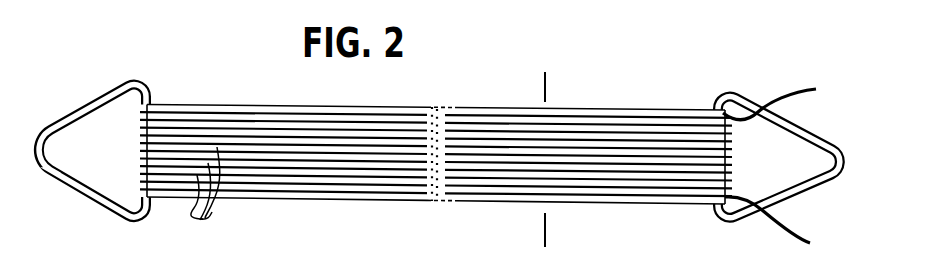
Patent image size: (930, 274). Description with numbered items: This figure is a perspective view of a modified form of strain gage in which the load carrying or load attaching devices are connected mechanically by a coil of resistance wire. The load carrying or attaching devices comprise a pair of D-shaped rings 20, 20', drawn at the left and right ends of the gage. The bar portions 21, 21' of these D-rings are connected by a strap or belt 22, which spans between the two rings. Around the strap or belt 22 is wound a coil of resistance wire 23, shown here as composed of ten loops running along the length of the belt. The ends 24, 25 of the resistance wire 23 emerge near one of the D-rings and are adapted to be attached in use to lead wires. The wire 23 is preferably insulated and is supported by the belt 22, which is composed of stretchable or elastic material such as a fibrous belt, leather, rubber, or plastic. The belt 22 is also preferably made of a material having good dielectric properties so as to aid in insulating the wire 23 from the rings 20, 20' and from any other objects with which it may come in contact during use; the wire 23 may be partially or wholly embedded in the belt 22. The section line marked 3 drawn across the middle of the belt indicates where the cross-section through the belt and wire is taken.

The D-shaped ring 20 is at (799, 156).
The D-shaped ring 20' is at (89, 168).
The bar portion 21 is at (691, 133).
The bar portion 21' is at (184, 122).
The strap or belt 22 is at (228, 103).
The coil of resistance wire 23 is at (218, 189).
The end of resistance wire 24 is at (790, 92).
The end of resistance wire 25 is at (790, 235).
The section line 3- 3 is at (547, 156).